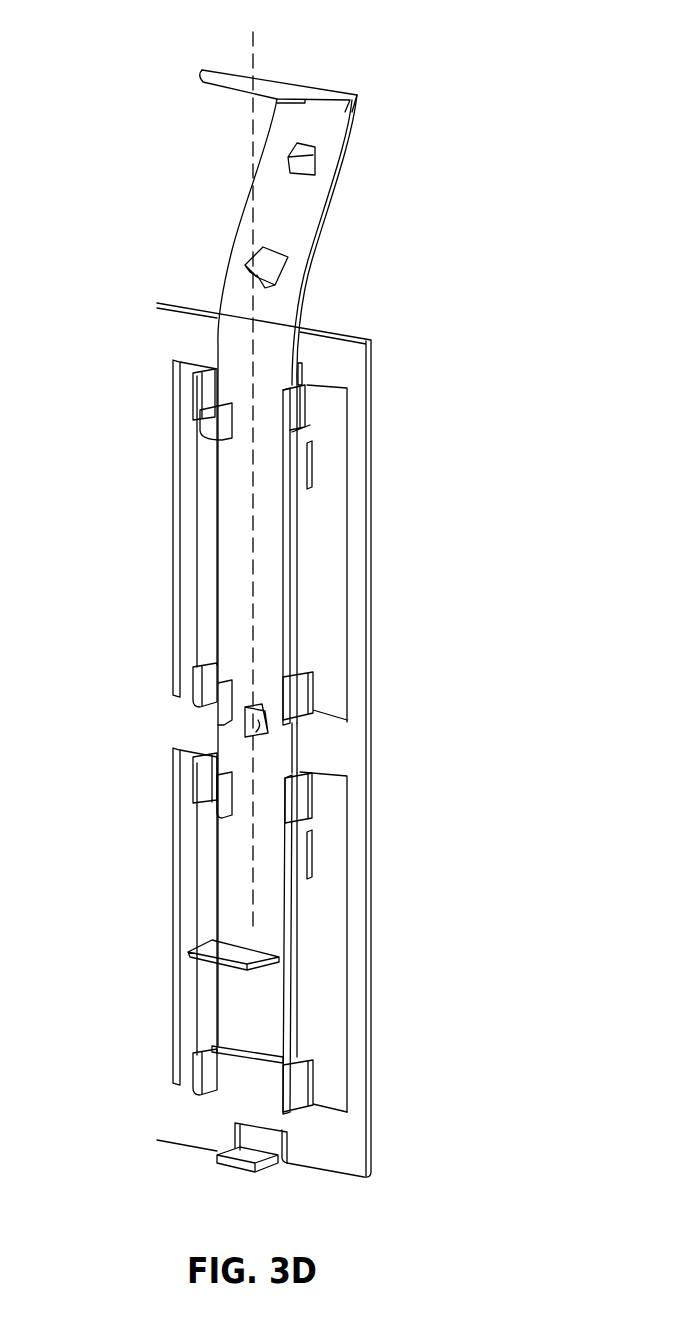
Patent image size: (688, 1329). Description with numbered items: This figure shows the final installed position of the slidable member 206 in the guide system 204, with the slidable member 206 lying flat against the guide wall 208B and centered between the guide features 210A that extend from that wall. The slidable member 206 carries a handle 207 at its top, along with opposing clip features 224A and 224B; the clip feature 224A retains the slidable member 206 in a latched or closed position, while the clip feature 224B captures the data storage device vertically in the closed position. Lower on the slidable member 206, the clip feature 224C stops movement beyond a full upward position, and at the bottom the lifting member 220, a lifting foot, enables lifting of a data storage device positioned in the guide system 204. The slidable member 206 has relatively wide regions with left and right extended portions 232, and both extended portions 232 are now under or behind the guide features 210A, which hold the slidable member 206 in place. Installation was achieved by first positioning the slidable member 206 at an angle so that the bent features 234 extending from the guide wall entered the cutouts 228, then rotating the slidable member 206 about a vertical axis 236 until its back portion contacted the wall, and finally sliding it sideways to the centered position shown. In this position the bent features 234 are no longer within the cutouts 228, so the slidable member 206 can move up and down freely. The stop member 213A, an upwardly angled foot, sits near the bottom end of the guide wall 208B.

The guide system 204 is at (270, 743).
The slidable member 206 is at (150, 162).
The handle 207 is at (280, 74).
The guide wall 208B is at (350, 362).
The guide feature 210A is at (208, 524).
The stop member 213A is at (240, 1148).
The lifting member 220 is at (230, 957).
The clip feature 224A is at (302, 163).
The clip feature 224B is at (273, 258).
The clip feature 224C is at (263, 737).
The cutouts 228 is at (220, 438).
The extended portions 232 is at (307, 487).
The bent features 234 is at (205, 386).
The vertical axis 236 is at (252, 35).